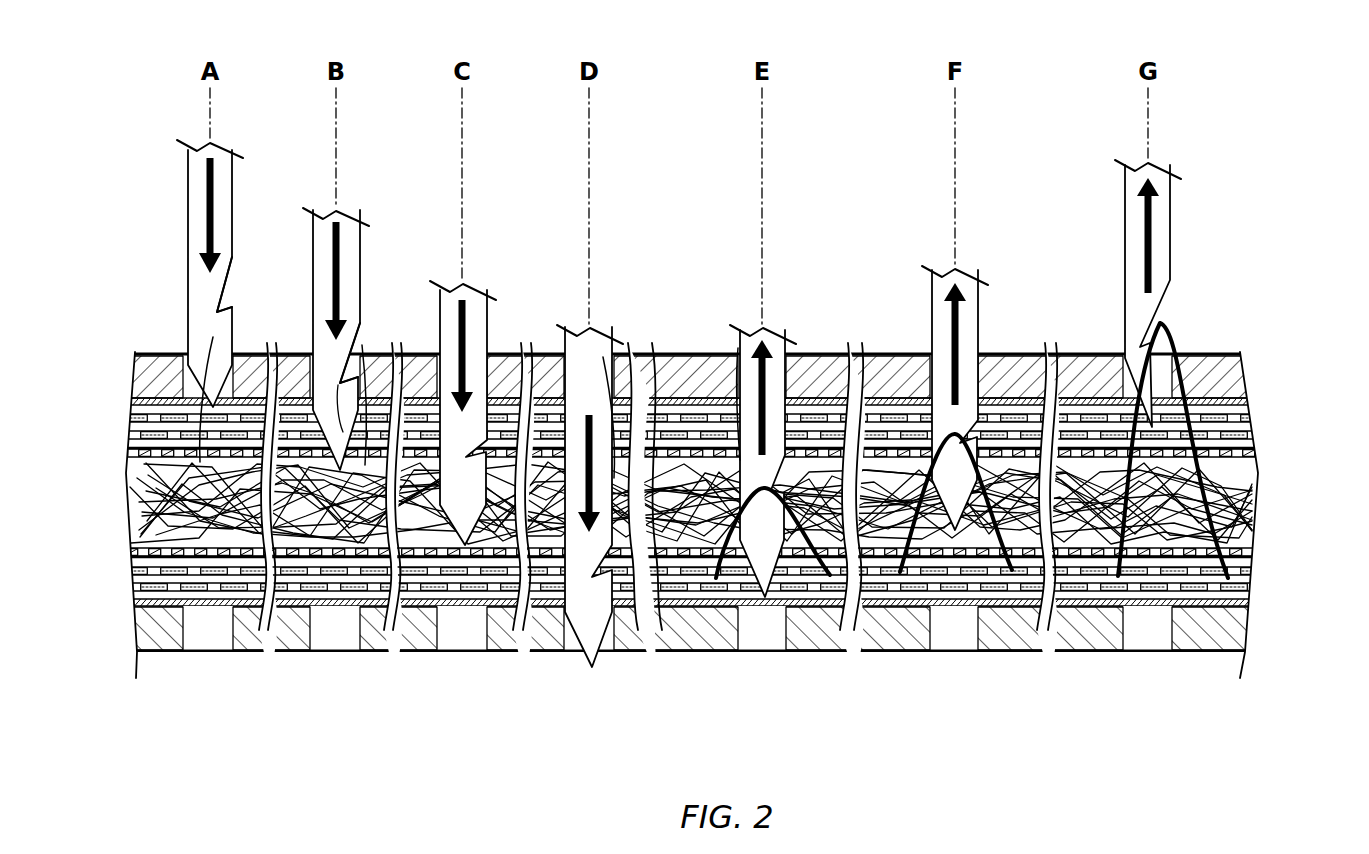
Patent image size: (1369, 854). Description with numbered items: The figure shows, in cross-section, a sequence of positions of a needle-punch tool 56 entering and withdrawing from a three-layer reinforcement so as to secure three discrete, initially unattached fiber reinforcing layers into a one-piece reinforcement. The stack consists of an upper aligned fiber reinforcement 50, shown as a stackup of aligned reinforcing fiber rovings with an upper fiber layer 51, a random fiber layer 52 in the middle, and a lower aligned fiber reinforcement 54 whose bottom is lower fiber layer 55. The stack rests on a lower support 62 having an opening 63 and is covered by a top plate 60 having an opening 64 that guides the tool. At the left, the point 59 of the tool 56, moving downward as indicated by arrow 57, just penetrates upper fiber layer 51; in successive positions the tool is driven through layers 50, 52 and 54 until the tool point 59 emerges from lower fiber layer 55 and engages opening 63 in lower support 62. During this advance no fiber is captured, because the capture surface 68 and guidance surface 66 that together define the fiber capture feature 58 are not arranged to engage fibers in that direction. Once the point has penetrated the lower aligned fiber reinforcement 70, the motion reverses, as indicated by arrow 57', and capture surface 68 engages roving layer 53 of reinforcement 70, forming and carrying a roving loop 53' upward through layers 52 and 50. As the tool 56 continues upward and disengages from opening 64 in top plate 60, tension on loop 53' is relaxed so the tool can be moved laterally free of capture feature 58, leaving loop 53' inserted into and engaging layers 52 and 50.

The aligned fiber reinforcement 50 is at (678, 577).
The upper fiber layer 51 is at (1243, 398).
The random fiber layer 52 is at (1243, 548).
The roving layer 53 is at (662, 621).
The roving loop 53' is at (996, 503).
The aligned fiber reinforcement 54 is at (666, 621).
The lower fiber layer 55 is at (1143, 612).
The tool 56 is at (193, 247).
The arrow 57 is at (351, 344).
The arrow 57' is at (1000, 316).
The fiber capture feature 58 is at (216, 300).
The tool point 59 is at (200, 402).
The top plate 60 is at (163, 352).
The lower support 62 is at (1090, 652).
The opening in lower support 63 is at (333, 627).
The opening in top plate 64 is at (215, 345).
The guidance surface 66 is at (345, 377).
The capture surface 68 is at (343, 383).
The lower aligned fiber reinforcement 70 is at (662, 614).